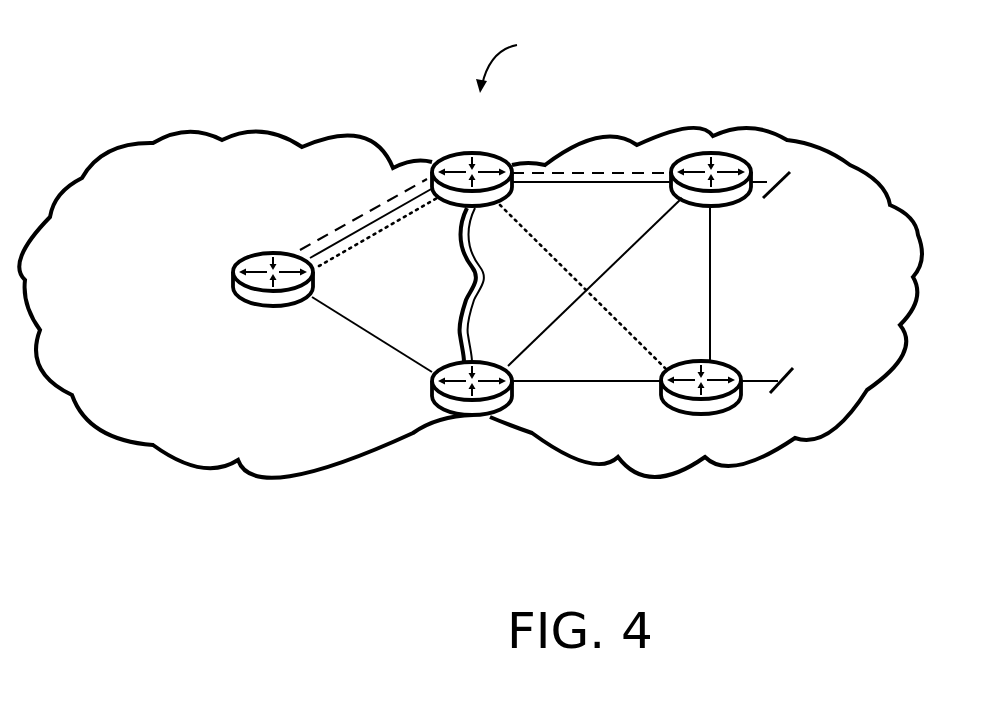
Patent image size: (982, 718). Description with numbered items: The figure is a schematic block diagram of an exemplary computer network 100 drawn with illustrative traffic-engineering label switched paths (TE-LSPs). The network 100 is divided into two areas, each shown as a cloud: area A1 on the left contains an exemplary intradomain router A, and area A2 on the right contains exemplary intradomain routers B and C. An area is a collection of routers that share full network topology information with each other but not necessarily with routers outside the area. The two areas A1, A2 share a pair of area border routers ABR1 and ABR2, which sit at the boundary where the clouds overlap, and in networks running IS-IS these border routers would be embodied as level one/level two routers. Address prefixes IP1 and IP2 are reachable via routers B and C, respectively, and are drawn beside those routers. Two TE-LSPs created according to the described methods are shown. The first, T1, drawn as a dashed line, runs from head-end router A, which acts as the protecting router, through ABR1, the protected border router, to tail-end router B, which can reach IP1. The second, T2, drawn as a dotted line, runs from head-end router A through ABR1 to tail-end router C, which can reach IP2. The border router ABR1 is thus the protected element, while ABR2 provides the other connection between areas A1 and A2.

The computer network 100 is at (295, 552).
The intradomain router A is at (248, 286).
The intradomain router B is at (717, 205).
The intradomain router C is at (712, 367).
The area border router ABR1 is at (571, 194).
The area border router ABR2 is at (457, 430).
The TE-LSP T1 is at (332, 213).
The TE-LSP T2 is at (392, 247).
The address prefix IP1 is at (793, 192).
The address prefix IP2 is at (789, 387).
The area A1 is at (246, 304).
The area A2 is at (706, 302).